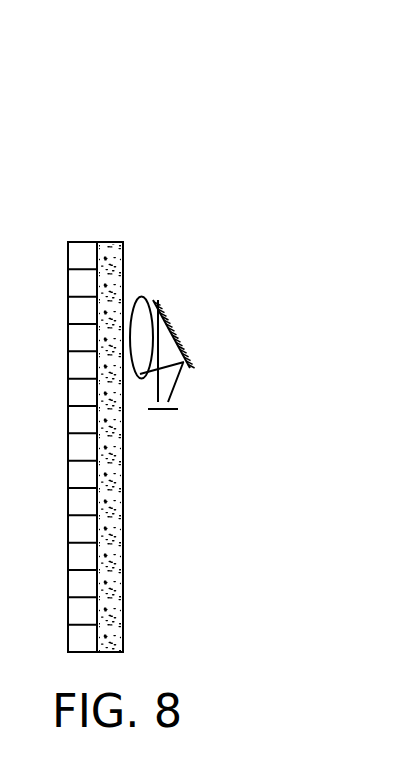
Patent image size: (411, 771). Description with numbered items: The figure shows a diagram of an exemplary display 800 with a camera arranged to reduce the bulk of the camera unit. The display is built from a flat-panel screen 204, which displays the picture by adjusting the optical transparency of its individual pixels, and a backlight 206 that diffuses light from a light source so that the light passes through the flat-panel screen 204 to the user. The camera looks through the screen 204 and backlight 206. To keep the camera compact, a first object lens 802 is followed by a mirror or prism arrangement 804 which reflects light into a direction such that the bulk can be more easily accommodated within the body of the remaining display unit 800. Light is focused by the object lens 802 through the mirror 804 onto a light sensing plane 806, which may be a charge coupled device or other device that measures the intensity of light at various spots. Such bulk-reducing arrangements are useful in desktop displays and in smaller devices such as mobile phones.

The display 800 is at (123, 52).
The flat-panel screen 204 is at (82, 242).
The backlight 206 is at (108, 242).
The object lens 802 is at (148, 320).
The mirror or prism arrangement 804 is at (143, 323).
The light sensing plane 806 is at (197, 409).